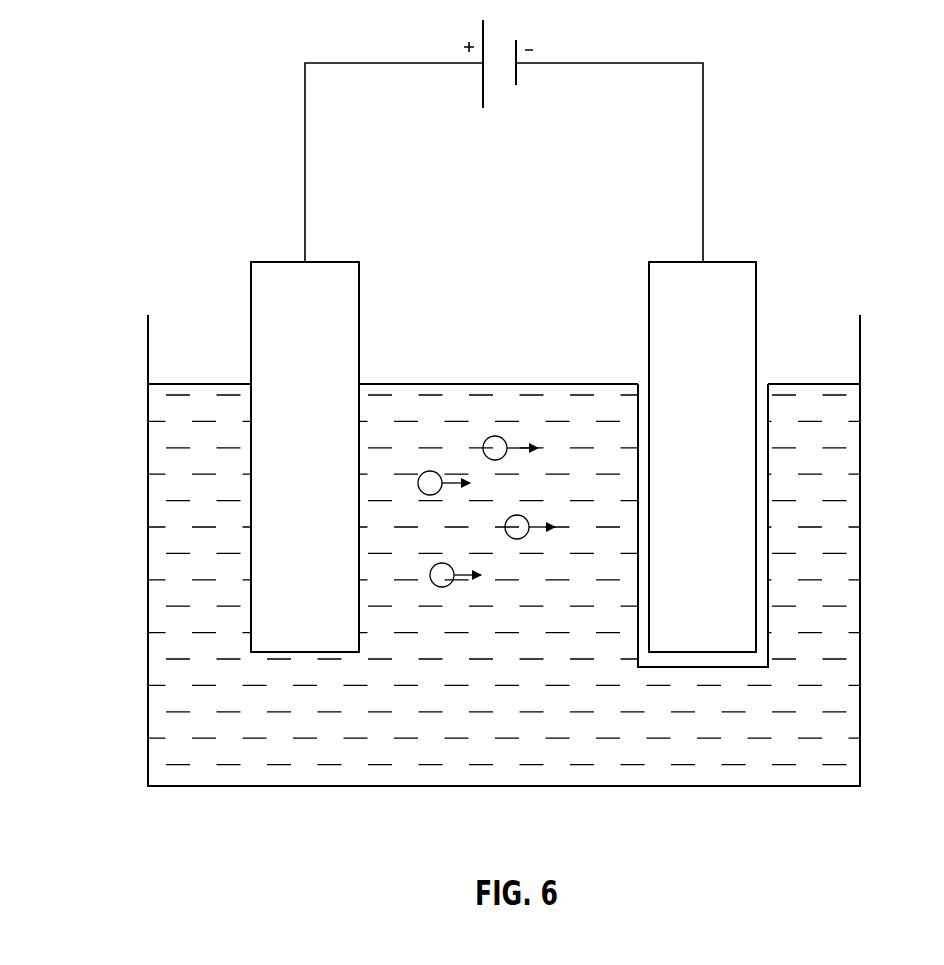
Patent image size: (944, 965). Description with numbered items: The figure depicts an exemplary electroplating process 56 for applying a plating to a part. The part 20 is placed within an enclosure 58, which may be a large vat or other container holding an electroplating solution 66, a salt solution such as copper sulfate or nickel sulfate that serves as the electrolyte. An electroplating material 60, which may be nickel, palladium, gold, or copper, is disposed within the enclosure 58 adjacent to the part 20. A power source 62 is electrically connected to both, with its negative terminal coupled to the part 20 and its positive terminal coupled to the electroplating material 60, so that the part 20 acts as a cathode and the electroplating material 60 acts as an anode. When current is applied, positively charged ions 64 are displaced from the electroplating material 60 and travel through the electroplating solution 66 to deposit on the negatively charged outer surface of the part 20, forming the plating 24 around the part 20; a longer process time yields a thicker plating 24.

The part 20 is at (748, 317).
The plating 24 is at (638, 637).
The electroplating process 56 is at (127, 308).
The enclosure 58 is at (148, 551).
The electroplating material 60 is at (250, 283).
The power source 62 is at (518, 76).
The positively charged ions 64 is at (442, 595).
The electroplating solution 66 is at (160, 717).